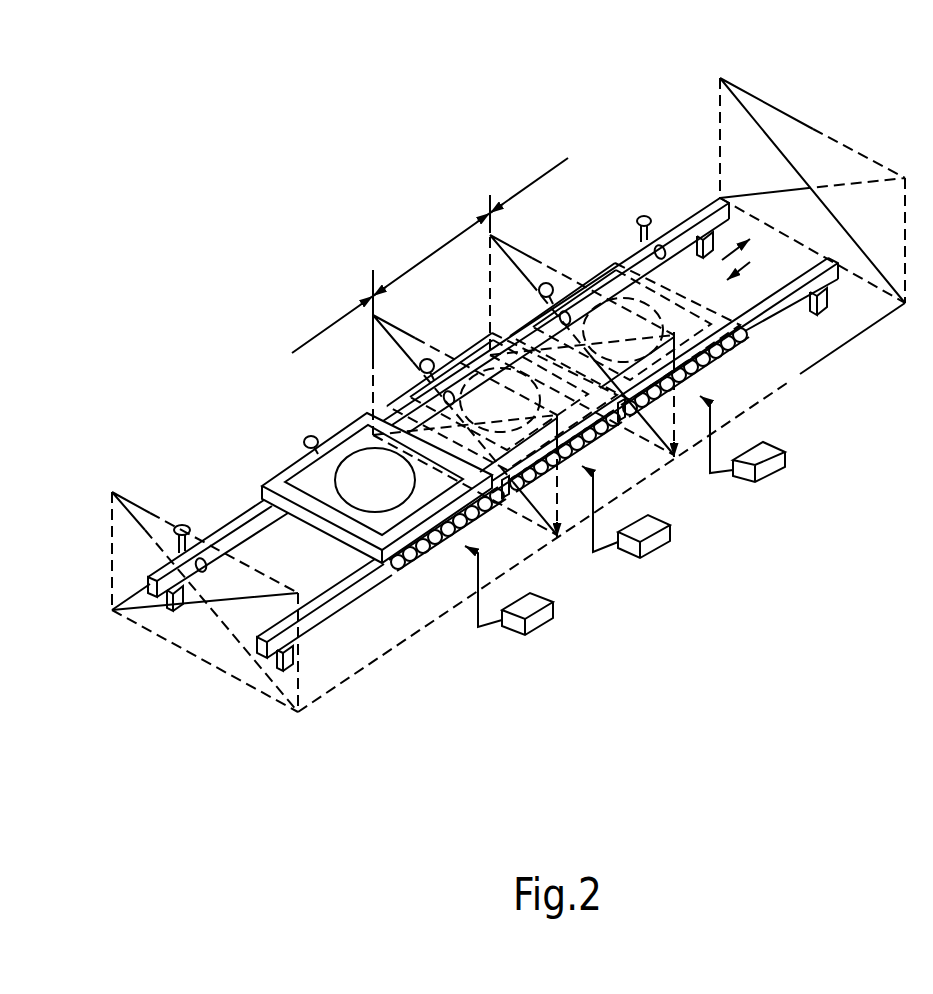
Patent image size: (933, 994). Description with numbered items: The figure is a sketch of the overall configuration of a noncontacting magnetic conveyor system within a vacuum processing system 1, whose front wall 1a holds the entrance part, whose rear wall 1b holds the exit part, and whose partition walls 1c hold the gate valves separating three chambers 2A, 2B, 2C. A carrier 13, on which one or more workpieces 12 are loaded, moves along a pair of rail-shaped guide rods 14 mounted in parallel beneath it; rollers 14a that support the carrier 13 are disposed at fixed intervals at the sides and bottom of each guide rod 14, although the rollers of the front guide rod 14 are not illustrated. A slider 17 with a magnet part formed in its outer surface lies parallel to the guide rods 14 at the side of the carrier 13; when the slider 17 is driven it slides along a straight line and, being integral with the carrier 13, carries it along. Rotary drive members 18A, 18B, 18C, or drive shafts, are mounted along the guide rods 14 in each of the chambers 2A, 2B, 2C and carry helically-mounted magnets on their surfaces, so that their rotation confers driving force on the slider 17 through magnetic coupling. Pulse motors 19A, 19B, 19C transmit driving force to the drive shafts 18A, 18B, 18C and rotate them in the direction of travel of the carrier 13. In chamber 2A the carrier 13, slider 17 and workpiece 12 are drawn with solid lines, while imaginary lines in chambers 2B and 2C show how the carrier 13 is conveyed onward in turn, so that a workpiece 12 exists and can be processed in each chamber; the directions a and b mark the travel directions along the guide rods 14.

The vacuum processing system 1 is at (501, 382).
The front wall 1a is at (133, 503).
The rear wall 1b is at (822, 132).
The partition wall 1c is at (540, 380).
The chamber 2A is at (322, 333).
The chamber 2B is at (438, 253).
The chamber 2C is at (540, 180).
The workpiece 12 is at (360, 470).
The carrier 13 is at (275, 485).
The guide rod 14 is at (180, 465).
The roller 14a is at (311, 441).
The slider 17 is at (621, 494).
The rotary drive member 18A is at (497, 494).
The rotary drive member 18B is at (614, 444).
The rotary drive member 18C is at (750, 350).
The pulse motor 19A is at (515, 637).
The pulse motor 19B is at (655, 559).
The pulse motor 19C is at (768, 483).
The forward direction a is at (725, 257).
The backward direction b is at (752, 262).